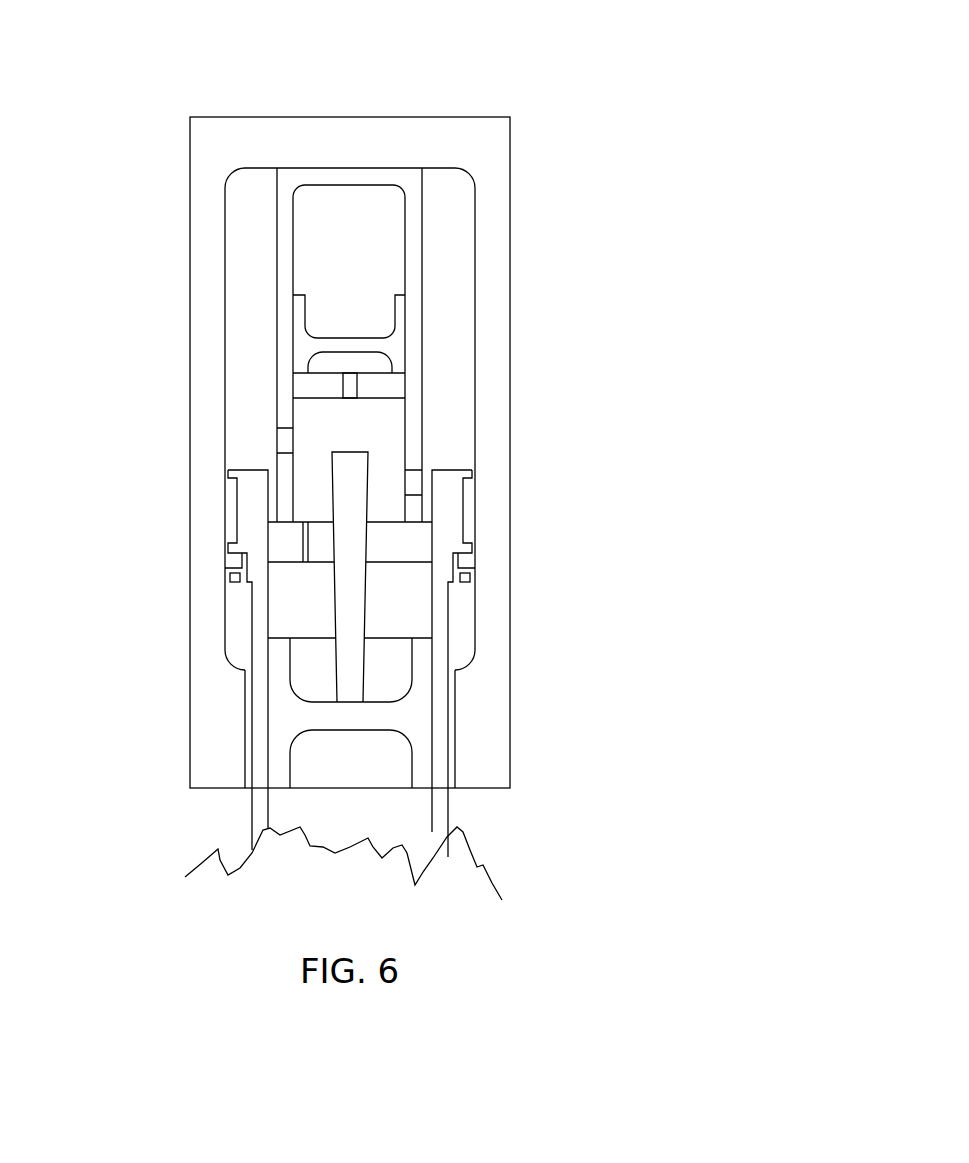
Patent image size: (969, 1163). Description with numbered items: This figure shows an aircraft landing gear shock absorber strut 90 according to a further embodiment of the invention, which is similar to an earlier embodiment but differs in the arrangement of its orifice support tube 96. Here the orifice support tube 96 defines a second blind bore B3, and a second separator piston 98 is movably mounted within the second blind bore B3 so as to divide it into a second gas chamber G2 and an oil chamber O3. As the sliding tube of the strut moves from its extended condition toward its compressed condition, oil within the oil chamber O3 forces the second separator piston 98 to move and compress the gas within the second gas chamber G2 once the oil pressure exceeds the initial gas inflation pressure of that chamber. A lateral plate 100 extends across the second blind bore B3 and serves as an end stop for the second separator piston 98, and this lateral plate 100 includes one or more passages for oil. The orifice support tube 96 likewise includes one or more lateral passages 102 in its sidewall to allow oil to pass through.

The aircraft landing gear shock absorber strut 90 is at (622, 81).
The orifice support tube 96 is at (288, 175).
The second gas chamber G2 is at (345, 200).
The second blind bore B3 is at (387, 217).
The oil chamber O3 is at (390, 417).
The second separator piston 98 is at (295, 340).
The lateral plate 100 is at (303, 387).
The lateral passages 102 is at (287, 438).